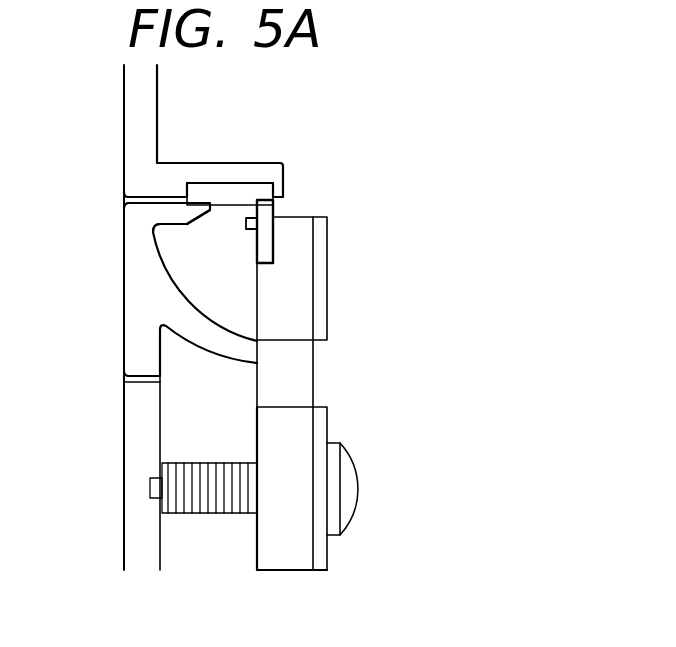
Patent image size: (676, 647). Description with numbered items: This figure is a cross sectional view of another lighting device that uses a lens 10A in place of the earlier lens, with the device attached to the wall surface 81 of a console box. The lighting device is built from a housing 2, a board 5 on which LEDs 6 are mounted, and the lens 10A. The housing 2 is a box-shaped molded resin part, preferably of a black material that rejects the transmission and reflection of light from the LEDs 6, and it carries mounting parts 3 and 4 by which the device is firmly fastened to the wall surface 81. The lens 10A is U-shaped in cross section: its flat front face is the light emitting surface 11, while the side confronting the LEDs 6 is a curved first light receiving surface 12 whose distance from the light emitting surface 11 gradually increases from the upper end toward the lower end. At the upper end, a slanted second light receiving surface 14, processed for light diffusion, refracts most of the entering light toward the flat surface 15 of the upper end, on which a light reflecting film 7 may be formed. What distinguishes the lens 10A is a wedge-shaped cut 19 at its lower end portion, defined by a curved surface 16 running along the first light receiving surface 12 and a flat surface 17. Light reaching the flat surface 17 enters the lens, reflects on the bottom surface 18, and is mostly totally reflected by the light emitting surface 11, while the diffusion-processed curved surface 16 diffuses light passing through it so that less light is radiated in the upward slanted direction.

The housing 2 is at (307, 216).
The mounting part 3 is at (287, 562).
The mounting part 4 is at (231, 186).
The board 5 is at (273, 210).
The LED 6 is at (247, 225).
The light reflecting film 7 is at (170, 198).
The lens 10A is at (140, 296).
The light emitting surface 11 is at (125, 225).
The first light receiving surface 12 is at (197, 312).
The second light receiving surface 14 is at (197, 227).
The surface of the upper end 15 is at (153, 197).
The curved surface 16 is at (203, 355).
The flat surface 17 is at (163, 362).
The bottom surface 18 is at (145, 380).
The wedge-shaped cut 19 is at (206, 404).
The wall surface 81 is at (157, 108).